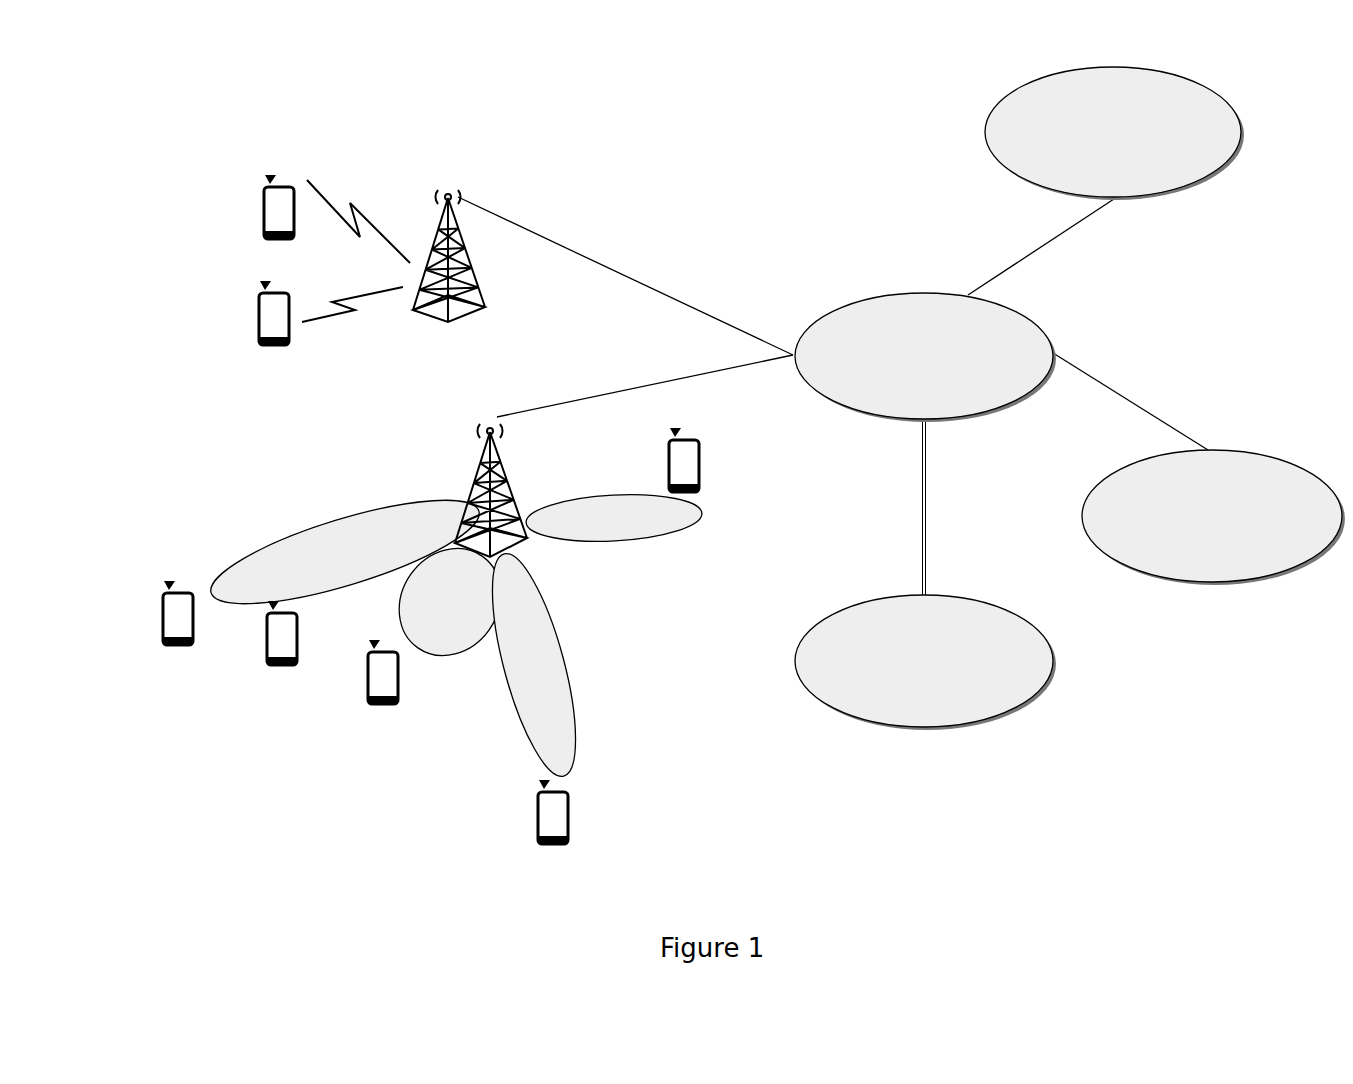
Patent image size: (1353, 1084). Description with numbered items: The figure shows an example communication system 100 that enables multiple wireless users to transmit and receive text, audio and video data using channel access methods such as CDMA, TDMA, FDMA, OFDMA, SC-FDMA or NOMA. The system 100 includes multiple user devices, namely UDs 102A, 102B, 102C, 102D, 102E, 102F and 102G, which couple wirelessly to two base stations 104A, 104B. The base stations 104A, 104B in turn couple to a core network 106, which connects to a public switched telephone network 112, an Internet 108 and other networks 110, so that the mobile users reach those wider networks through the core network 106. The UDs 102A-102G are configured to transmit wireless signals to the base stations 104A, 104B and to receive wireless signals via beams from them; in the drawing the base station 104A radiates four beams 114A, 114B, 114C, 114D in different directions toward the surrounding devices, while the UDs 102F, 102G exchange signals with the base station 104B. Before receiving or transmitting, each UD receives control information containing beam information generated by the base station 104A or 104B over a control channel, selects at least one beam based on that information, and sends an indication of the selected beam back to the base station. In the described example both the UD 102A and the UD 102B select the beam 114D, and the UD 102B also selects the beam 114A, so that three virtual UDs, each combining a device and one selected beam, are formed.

The communication system 100 is at (241, 104).
The user device 102A is at (173, 646).
The user device 102B is at (273, 667).
The user device 102C is at (377, 706).
The user device 102D is at (545, 846).
The user device 102E is at (700, 469).
The user device 102F is at (285, 185).
The user device 102G is at (272, 347).
The base station 104A is at (481, 422).
The base station 104B is at (452, 184).
The core network 106 is at (1027, 313).
The Internet 108 is at (1253, 453).
The other networks 110 is at (1005, 608).
The public switched telephone network 112 is at (1205, 83).
The beam 114A is at (435, 653).
The beam 114B is at (565, 683).
The beam 114C is at (648, 540).
The beam 114D is at (316, 540).